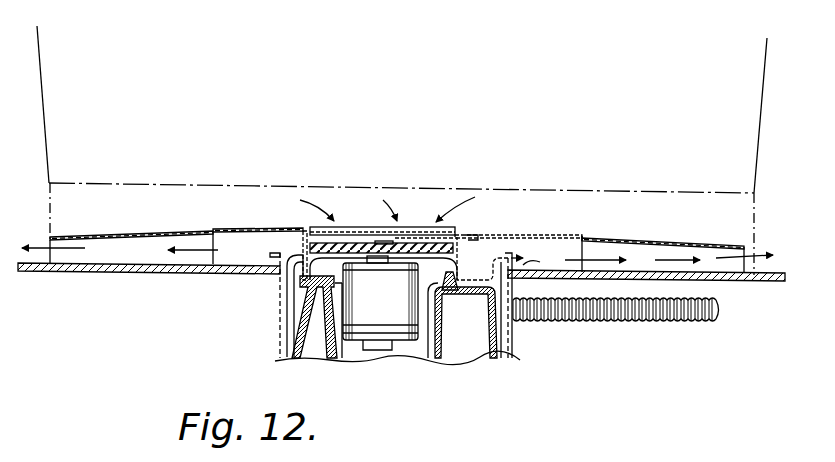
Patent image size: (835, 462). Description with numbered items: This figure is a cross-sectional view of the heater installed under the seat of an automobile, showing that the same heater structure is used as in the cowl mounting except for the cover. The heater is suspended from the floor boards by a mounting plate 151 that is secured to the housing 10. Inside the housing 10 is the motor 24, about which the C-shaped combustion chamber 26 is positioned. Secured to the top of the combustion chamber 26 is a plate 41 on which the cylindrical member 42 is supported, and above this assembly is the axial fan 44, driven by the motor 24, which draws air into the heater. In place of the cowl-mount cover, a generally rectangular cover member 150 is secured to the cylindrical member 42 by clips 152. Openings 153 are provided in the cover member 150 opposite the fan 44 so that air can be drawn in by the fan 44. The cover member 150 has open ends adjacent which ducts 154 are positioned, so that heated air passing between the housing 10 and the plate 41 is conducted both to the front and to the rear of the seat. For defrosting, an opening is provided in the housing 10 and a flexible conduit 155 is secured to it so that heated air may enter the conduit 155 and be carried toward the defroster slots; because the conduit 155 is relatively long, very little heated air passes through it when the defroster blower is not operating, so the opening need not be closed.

The housing 10 is at (515, 285).
The motor 24 is at (391, 350).
The combustion chamber 26 is at (486, 356).
The plate 41 is at (505, 253).
The cylindrical member 42 is at (460, 250).
The axial fan 44 is at (343, 248).
The cover member 150 is at (543, 236).
The mounting plate 151 is at (541, 262).
The clips 152 is at (477, 232).
The openings 153 is at (418, 228).
The ducts 154 is at (136, 258).
The flexible conduit 155 is at (650, 324).